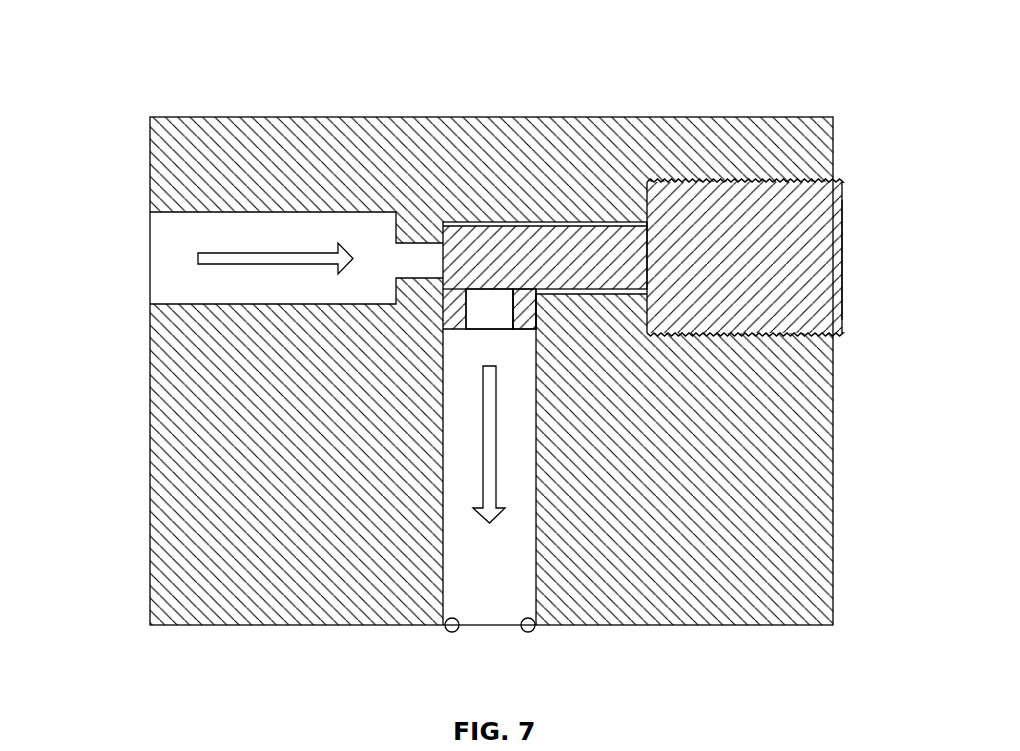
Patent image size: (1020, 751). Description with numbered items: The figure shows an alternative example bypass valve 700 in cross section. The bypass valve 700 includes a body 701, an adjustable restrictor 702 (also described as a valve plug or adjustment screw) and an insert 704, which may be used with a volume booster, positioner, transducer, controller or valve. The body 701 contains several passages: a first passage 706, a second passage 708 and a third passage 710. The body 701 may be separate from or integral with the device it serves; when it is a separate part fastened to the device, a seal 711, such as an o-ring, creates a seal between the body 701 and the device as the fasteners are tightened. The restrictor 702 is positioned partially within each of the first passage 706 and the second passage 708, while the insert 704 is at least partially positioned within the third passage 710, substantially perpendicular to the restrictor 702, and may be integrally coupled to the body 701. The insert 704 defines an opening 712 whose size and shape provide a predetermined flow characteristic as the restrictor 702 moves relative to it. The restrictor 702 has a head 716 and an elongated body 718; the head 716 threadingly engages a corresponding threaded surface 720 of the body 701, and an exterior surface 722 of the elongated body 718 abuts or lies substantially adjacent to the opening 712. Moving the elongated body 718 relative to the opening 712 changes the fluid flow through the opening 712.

The bypass valve 700 is at (116, 54).
The body 701 is at (805, 562).
The restrictor 702 is at (778, 203).
The insert 704 is at (527, 307).
The first passage 706 is at (213, 226).
The second passage 708 is at (560, 223).
The third passage 710 is at (520, 565).
The seal 711 is at (529, 632).
The opening 712 is at (480, 317).
The head 716 is at (827, 293).
The elongated body 718 is at (456, 243).
The threaded surface 720 is at (707, 180).
The exterior surface 722 is at (633, 297).